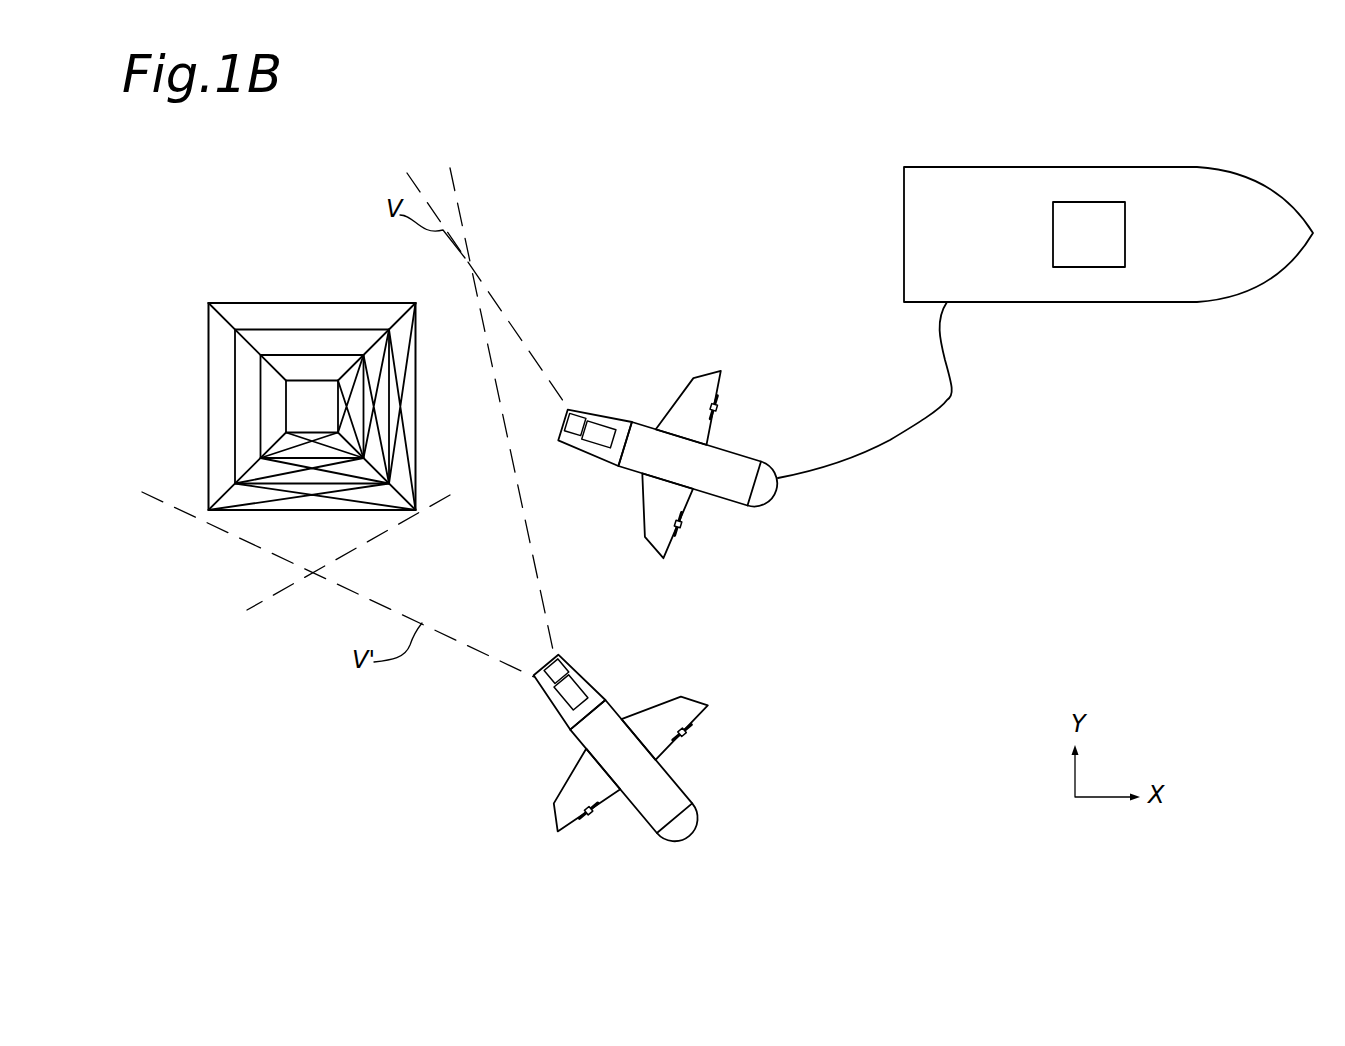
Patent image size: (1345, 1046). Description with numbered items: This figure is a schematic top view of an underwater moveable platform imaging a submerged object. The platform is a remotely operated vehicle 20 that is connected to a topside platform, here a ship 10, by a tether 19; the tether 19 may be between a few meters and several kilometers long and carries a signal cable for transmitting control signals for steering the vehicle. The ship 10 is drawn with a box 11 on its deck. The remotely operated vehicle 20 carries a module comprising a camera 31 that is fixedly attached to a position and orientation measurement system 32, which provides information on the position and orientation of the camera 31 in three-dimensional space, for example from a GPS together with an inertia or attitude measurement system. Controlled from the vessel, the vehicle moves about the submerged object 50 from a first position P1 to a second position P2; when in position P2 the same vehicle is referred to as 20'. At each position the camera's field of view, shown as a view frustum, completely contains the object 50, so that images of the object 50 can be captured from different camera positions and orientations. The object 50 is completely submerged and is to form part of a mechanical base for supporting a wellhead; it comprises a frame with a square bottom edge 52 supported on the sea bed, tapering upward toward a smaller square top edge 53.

The ship 10 is at (1243, 206).
The control station on vessel 11 is at (1097, 220).
The tether 19 is at (951, 404).
The remotely operated vehicle (ROV) 20 is at (667, 474).
The ROV in position P2 20' is at (646, 748).
The camera 31 is at (570, 414).
The position and orientation measurement system 32 is at (598, 431).
The submerged object 50 is at (193, 313).
The square bottom edge 52 is at (298, 302).
The square top edge 53 is at (285, 403).
The first position P1 is at (782, 437).
The second position P2 is at (722, 801).